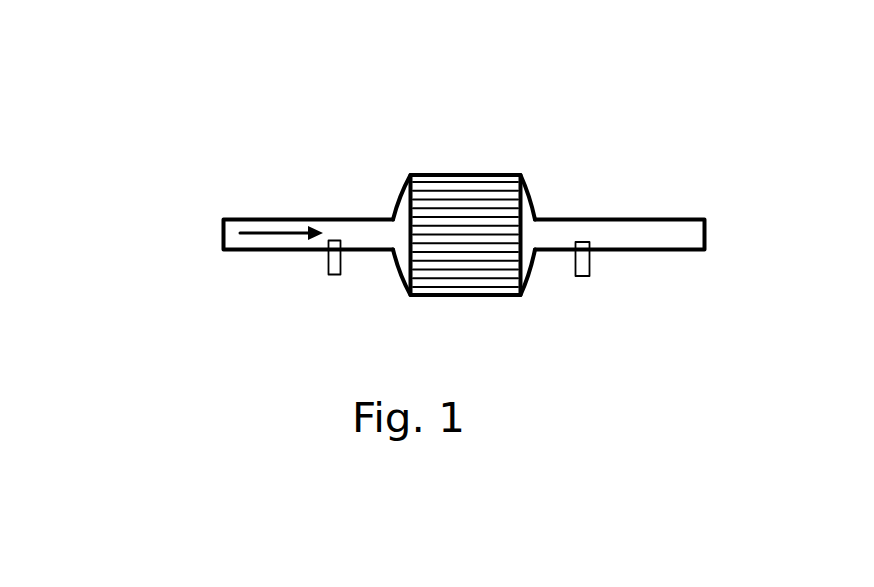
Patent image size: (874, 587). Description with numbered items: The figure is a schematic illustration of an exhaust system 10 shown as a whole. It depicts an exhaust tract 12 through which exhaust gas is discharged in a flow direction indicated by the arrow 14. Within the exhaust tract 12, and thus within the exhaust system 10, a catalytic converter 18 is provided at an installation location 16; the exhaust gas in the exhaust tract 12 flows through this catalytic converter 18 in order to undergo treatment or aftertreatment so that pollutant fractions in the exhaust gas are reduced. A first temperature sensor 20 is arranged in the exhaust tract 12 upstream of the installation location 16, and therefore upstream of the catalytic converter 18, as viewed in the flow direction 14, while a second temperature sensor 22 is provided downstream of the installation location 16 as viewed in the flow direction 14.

The exhaust system 10 is at (653, 138).
The exhaust tract 12 is at (365, 230).
The flow direction 14 is at (285, 232).
The installation location 16 is at (505, 265).
The catalytic converter 18 is at (505, 175).
The first temperature sensor 20 is at (327, 259).
The second temperature sensor 22 is at (590, 262).